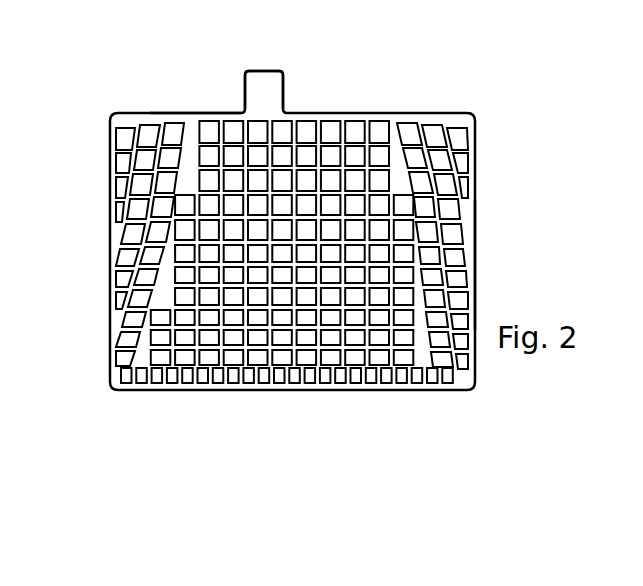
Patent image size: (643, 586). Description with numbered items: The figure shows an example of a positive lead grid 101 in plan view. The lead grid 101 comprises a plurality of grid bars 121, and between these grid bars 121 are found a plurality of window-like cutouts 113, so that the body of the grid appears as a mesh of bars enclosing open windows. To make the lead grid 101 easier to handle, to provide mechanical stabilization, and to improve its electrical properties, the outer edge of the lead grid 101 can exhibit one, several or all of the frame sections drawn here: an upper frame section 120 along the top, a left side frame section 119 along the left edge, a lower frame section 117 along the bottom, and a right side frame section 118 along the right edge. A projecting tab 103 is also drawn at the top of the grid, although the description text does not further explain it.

The positive lead grid 101 is at (481, 113).
The tab 103 is at (268, 78).
The window-like cutouts 113 is at (396, 232).
The lower frame section 117 is at (284, 391).
The right side frame section 118 is at (476, 266).
The left side frame section 119 is at (112, 257).
The upper frame section 120 is at (188, 112).
The grid bars 121 is at (394, 138).